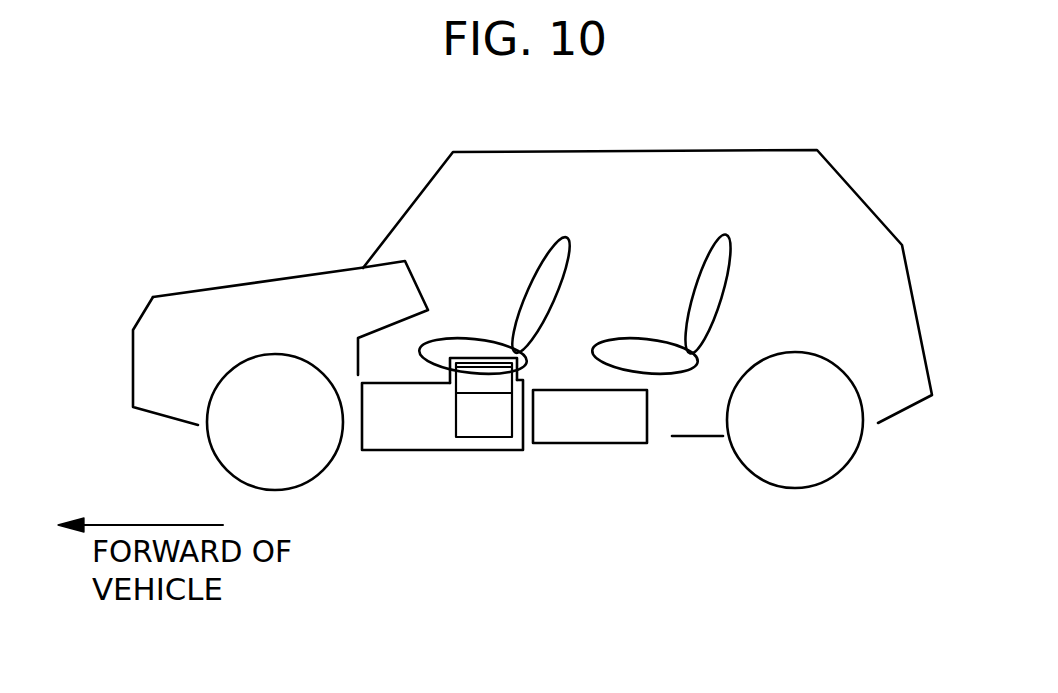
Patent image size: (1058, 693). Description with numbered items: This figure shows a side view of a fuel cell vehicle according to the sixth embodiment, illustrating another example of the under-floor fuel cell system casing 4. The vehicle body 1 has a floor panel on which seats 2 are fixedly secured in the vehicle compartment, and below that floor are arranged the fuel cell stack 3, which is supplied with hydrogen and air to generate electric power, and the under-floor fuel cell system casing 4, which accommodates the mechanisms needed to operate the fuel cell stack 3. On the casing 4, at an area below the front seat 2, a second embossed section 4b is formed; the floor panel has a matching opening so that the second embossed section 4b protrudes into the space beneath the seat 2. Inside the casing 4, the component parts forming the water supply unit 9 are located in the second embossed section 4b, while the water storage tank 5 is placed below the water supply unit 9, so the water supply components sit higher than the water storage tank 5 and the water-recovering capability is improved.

The vehicle body 1 is at (870, 207).
The seat 2 is at (563, 282).
The fuel cell stack 3 is at (604, 432).
The under-floor fuel cell system casing 4 is at (390, 432).
The second embossed section 4b is at (468, 360).
The water storage tank 5 is at (493, 428).
The water supply unit 9 is at (462, 378).